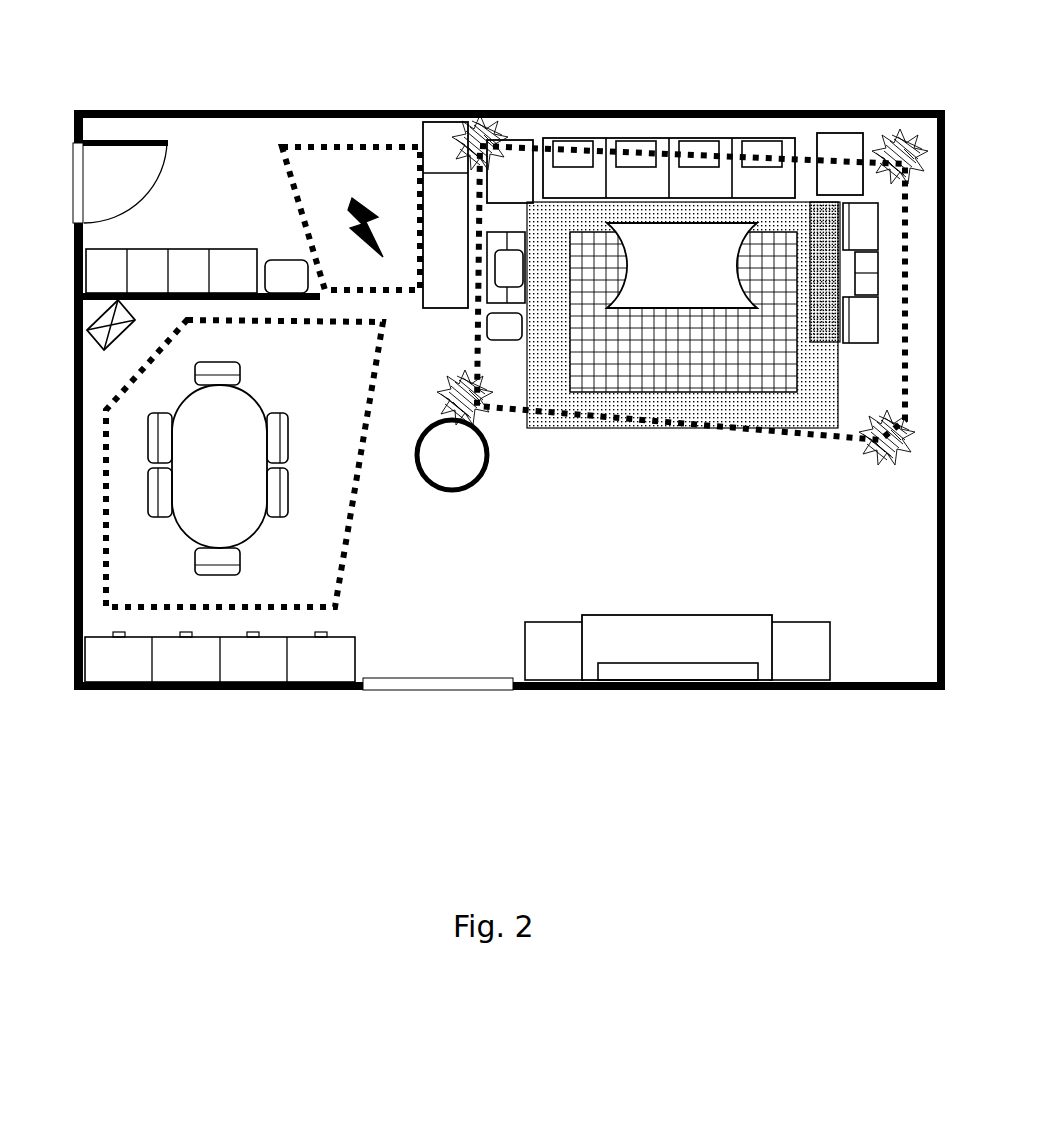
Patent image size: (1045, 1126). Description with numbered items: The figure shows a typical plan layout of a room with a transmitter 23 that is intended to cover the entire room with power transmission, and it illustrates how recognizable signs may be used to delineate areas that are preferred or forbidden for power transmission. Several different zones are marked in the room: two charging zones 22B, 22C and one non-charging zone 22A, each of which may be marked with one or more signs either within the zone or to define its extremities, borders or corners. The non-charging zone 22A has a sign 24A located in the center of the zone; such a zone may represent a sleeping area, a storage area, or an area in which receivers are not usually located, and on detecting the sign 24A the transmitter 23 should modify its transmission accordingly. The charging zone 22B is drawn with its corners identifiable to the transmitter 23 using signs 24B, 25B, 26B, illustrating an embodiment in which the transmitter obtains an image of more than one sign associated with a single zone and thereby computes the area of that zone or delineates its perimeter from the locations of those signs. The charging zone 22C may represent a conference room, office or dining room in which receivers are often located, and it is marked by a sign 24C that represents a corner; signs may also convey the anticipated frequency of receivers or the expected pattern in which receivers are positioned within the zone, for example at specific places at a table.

The non-charging zone 22A is at (404, 182).
The charging zone 22B is at (805, 188).
The charging zone 22C is at (308, 533).
The transmitter 23 is at (452, 492).
The sign 24A is at (348, 200).
The sign 24B is at (480, 137).
The sign 24C is at (108, 343).
The sign 25B is at (897, 157).
The sign 26B is at (893, 427).